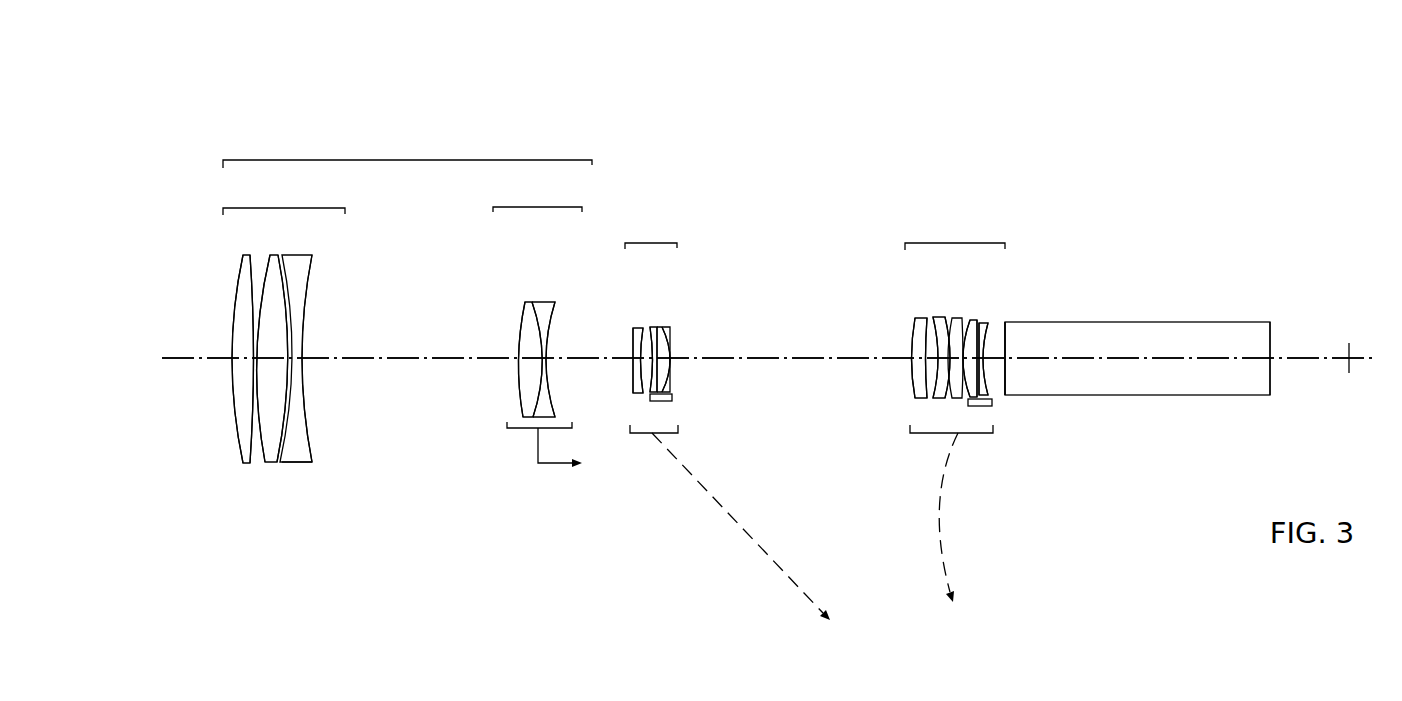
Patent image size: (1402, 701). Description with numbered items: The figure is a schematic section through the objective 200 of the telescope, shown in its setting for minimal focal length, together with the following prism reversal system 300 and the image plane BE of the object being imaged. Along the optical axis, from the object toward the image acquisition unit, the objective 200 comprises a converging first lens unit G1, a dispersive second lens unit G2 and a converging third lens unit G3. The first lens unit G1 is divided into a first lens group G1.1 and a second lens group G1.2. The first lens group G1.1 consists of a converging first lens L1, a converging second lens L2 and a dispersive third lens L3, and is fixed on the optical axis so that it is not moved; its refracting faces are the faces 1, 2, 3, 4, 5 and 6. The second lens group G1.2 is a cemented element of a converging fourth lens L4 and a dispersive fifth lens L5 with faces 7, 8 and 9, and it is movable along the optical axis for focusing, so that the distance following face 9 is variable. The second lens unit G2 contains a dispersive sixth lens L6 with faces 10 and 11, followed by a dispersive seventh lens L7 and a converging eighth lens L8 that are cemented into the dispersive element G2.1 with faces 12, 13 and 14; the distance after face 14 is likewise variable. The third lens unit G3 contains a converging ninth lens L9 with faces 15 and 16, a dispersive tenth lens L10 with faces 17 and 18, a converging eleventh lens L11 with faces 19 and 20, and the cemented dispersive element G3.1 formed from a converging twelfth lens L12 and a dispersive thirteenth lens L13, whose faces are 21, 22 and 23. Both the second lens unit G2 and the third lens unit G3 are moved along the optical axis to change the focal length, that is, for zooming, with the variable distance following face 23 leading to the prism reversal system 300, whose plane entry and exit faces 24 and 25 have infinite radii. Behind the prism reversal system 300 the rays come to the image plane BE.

The objective 200 is at (743, 80).
The prism reversal system 300 is at (1168, 335).
The image plane BE is at (1348, 341).
The first lens unit G1 is at (407, 146).
The first lens group G1.1 is at (284, 194).
The second lens group G1.2 is at (537, 321).
The second lens unit G2 is at (727, 418).
The dispersive element G2.1 is at (667, 407).
The third lens unit G3 is at (955, 407).
The dispersive element G3.1 is at (973, 402).
The first lens L1 is at (245, 267).
The second lens L2 is at (275, 277).
The third lens L3 is at (297, 277).
The fourth lens L4 is at (527, 303).
The fifth lens L5 is at (550, 307).
The sixth lens L6 is at (637, 327).
The seventh lens L7 is at (657, 328).
The eighth lens L8 is at (672, 327).
The ninth lens L9 is at (918, 317).
The tenth lens L10 is at (940, 317).
The eleventh lens L11 is at (958, 317).
The twelfth lens L12 is at (980, 320).
The thirteenth lens L13 is at (990, 327).
The face 1 is at (238, 434).
The face 2 is at (252, 462).
The face 3 is at (267, 463).
The face 4 is at (277, 463).
The face 5 is at (287, 443).
The face 6 is at (307, 423).
The face 7 is at (520, 330).
The face 8 is at (530, 400).
The face 9 is at (547, 383).
The face 10 is at (630, 340).
The face 11 is at (637, 380).
The face 12 is at (652, 330).
The face 13 is at (675, 345).
The face 14 is at (673, 375).
The face 15 is at (912, 327).
The face 16 is at (933, 317).
The face 17 is at (927, 395).
The face 18 is at (945, 396).
The face 19 is at (978, 320).
The face 20 is at (965, 400).
The face 21 is at (983, 400).
The face 22 is at (987, 323).
The face 23 is at (995, 323).
The face 24 is at (1010, 378).
The face 25 is at (1273, 387).